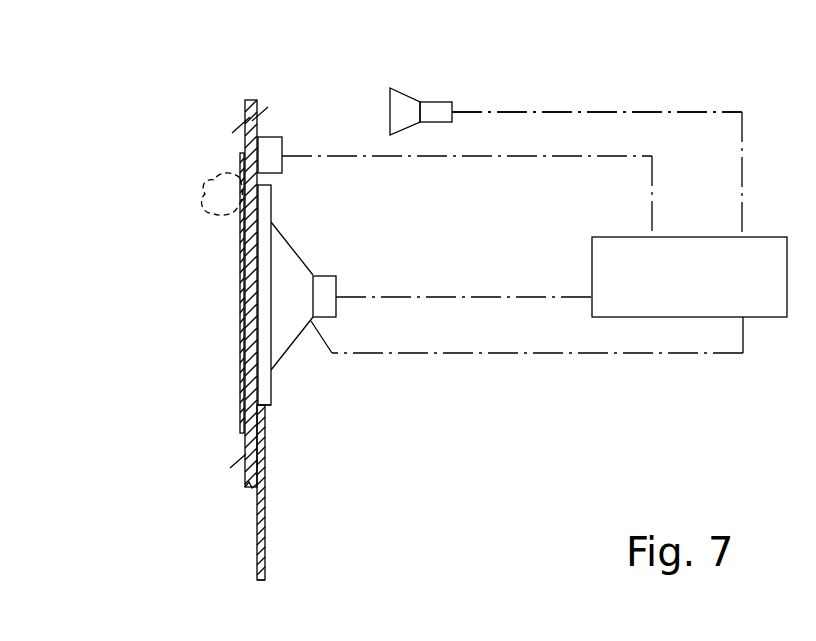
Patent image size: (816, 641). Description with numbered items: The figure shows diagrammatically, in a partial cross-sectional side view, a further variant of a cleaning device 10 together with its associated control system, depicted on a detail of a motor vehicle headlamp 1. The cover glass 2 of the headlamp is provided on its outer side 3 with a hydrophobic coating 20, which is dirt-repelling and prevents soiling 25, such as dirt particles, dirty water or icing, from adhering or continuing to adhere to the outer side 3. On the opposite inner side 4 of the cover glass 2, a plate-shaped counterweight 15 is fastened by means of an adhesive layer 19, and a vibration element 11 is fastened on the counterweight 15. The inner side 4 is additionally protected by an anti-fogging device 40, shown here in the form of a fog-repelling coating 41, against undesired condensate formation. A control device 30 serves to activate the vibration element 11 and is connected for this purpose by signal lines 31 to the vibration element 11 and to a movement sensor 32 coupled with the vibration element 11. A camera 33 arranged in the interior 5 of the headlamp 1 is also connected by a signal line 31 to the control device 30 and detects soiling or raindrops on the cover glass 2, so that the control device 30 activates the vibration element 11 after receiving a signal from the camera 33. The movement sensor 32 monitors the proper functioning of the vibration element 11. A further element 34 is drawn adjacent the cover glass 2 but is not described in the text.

The motor vehicle headlamp 1 is at (116, 318).
The cover glass 2 is at (250, 100).
The outer side 3 is at (241, 121).
The inner side 4 is at (258, 113).
The interior 5 is at (597, 87).
The cleaning device 10 is at (214, 368).
The vibration element 11 is at (283, 330).
The counterweight 15 is at (264, 199).
The adhesive layer 19 is at (264, 410).
The hydrophobic coating 20 is at (239, 317).
The soiling 25 is at (220, 200).
The control device 30 is at (694, 293).
The signal lines 31 is at (742, 173).
The movement sensor 32 is at (338, 288).
The camera 33 is at (405, 95).
The sensor 34 is at (282, 137).
The anti-fogging device 40 is at (265, 566).
The fog-repelling coating 41 is at (281, 508).